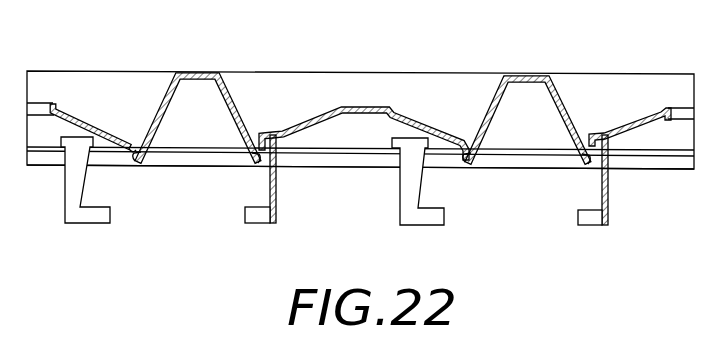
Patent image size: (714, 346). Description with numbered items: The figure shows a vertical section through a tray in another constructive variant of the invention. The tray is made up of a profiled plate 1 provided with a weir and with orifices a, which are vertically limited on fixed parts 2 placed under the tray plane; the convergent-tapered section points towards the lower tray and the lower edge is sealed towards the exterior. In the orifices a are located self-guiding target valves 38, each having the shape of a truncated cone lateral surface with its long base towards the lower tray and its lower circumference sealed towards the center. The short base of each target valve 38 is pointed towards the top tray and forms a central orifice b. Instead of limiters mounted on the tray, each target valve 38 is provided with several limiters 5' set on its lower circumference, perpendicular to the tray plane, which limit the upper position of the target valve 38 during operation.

The profiled plate 1 is at (231, 86).
The orifices a is at (297, 90).
The central orifice b is at (372, 107).
The fixed parts 2 is at (120, 158).
The self-guiding target valve 38 is at (340, 136).
The limiters 5' is at (426, 199).